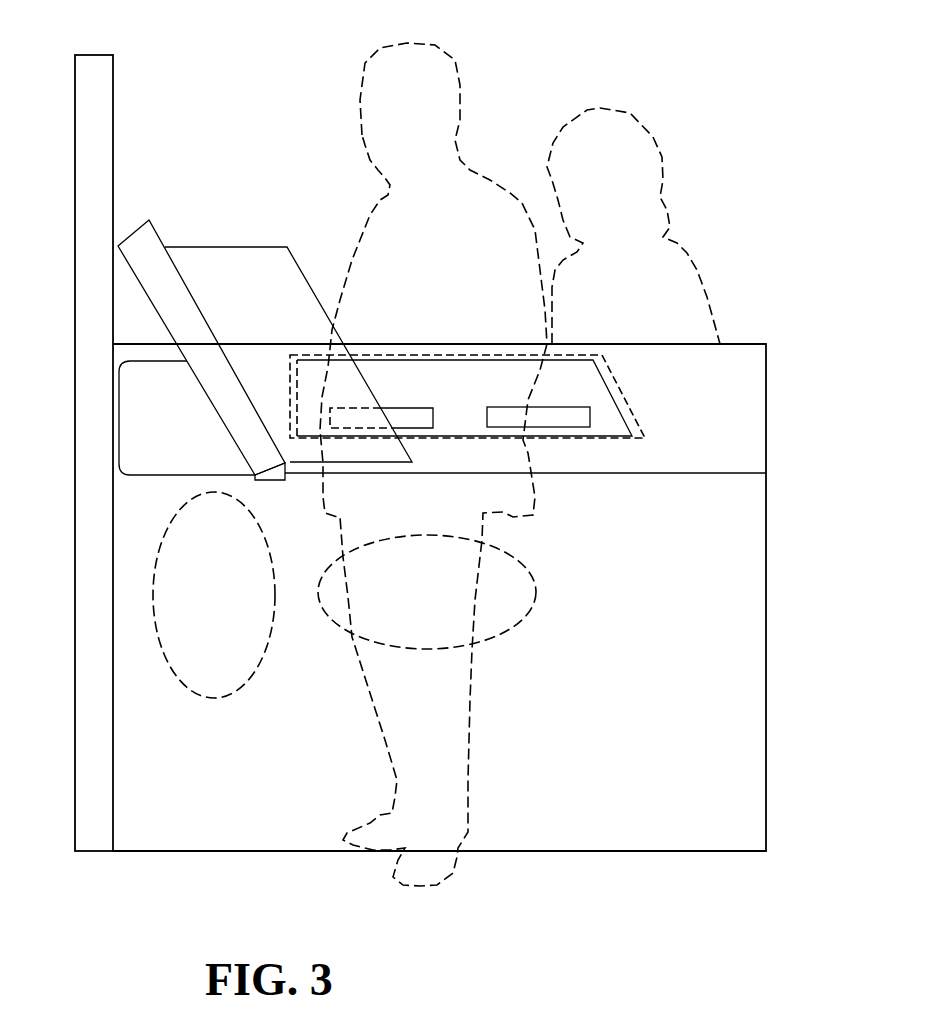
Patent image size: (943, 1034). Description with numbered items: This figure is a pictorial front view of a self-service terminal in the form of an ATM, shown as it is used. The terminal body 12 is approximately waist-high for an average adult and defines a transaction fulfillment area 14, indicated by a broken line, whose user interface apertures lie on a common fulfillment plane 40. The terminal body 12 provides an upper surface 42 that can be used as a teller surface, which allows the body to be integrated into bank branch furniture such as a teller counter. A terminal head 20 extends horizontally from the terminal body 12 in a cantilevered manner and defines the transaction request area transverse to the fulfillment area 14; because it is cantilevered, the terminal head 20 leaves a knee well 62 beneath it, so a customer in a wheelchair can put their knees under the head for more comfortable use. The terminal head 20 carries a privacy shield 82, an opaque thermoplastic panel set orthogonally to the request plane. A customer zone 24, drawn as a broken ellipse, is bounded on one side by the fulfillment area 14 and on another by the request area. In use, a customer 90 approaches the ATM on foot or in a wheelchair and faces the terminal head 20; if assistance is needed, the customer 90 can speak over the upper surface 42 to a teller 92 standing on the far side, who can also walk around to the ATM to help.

The terminal body 12 is at (705, 658).
The transaction fulfillment area 14 is at (612, 440).
The terminal head 20 is at (130, 235).
The customer zone 24 is at (515, 625).
The fulfillment plane 40 is at (720, 412).
The upper surface 42 is at (735, 344).
The knee well 62 is at (165, 655).
The privacy shield 82 is at (222, 246).
The customer 90 is at (427, 44).
The teller 92 is at (615, 107).